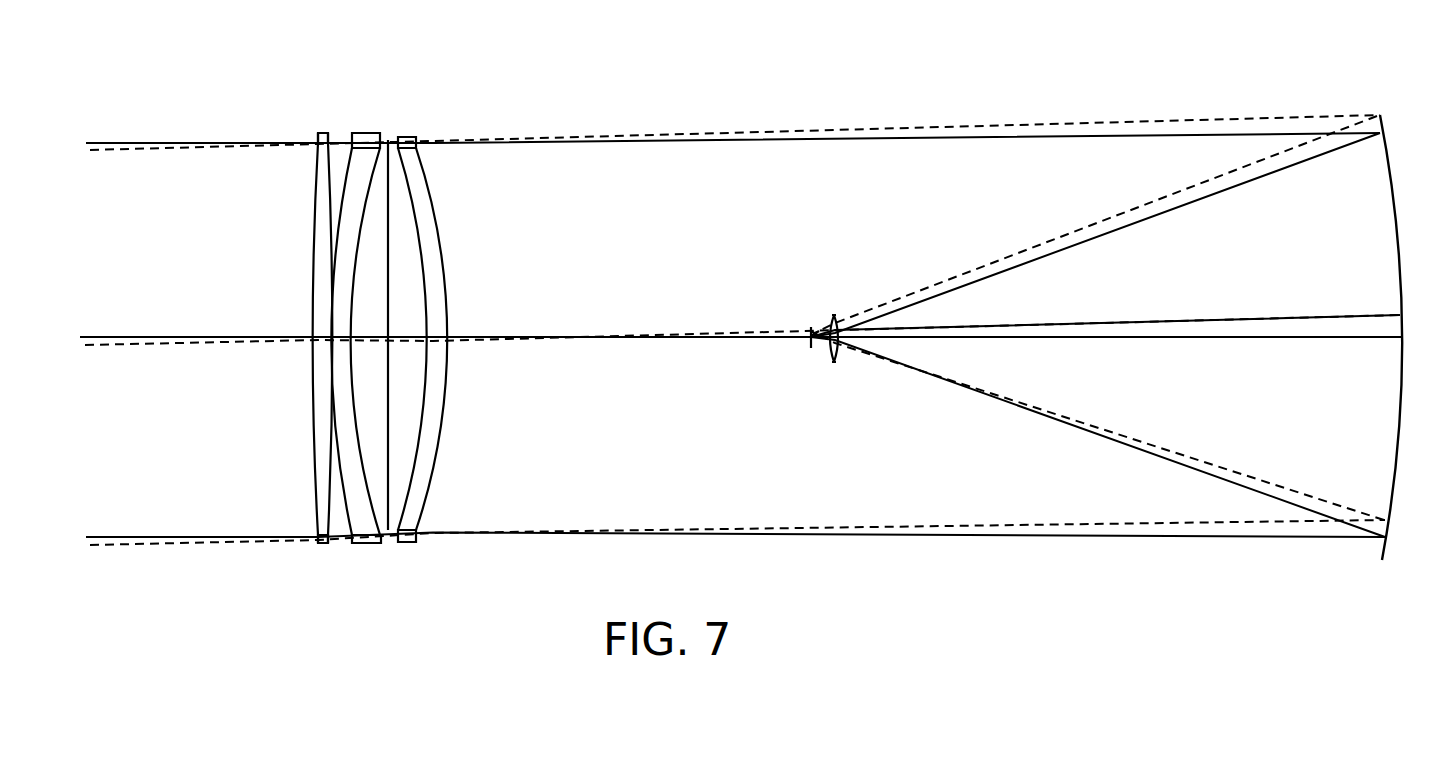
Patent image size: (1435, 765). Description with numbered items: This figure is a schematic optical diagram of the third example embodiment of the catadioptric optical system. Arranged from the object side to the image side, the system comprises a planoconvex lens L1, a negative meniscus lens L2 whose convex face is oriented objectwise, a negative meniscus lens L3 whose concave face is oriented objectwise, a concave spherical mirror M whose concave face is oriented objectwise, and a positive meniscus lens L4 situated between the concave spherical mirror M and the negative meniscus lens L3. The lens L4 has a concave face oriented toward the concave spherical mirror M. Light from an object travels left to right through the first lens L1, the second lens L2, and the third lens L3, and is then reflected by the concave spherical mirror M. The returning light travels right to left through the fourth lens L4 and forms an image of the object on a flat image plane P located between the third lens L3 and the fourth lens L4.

The planoconvex lens L1 is at (324, 132).
The negative meniscus lens L2 is at (370, 132).
The negative meniscus lens L3 is at (401, 136).
The positive meniscus lens L4 is at (833, 314).
The image plane P is at (810, 343).
The concave spherical mirror M is at (1394, 195).